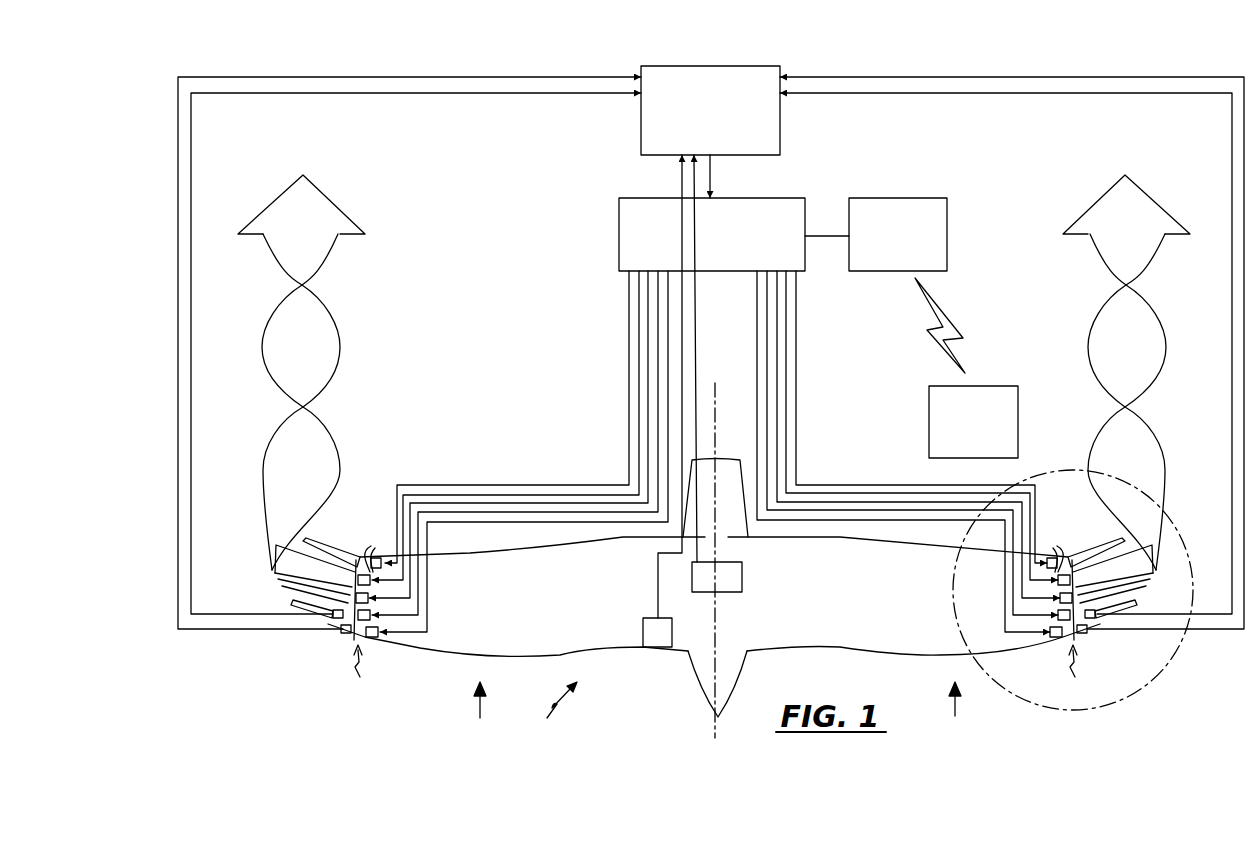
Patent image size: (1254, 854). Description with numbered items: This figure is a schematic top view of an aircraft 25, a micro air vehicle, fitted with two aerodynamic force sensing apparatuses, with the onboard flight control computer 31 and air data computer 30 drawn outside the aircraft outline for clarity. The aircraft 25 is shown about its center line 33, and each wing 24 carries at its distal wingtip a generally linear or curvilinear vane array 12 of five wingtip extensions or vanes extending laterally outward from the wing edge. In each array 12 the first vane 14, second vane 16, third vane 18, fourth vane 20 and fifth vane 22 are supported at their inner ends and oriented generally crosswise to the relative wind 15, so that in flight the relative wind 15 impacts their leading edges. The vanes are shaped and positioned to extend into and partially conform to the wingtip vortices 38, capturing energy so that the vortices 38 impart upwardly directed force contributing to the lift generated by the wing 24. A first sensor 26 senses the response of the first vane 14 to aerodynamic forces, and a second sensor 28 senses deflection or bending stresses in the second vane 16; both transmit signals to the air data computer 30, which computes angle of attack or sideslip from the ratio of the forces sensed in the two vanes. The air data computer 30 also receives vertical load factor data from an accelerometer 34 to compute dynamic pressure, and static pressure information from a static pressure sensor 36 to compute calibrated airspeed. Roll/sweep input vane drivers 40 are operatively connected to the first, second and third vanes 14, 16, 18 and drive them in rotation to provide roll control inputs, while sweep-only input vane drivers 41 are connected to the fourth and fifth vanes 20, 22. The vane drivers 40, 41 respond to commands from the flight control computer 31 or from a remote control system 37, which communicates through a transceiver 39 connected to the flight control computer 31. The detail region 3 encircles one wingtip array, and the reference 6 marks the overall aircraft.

The wing tip detail region 3 is at (1167, 670).
The aircraft 6 is at (553, 711).
The vane array 12 is at (717, 674).
The first vane 14 is at (333, 623).
The relative wind 15 is at (478, 710).
The second vane 16 is at (300, 600).
The third vane 18 is at (280, 573).
The fourth vane 20 is at (295, 553).
The fifth vane 22 is at (313, 537).
The wing 24 is at (577, 592).
The aircraft 25 is at (717, 592).
The first sensor 26 is at (346, 633).
The second sensor 28 is at (337, 608).
The air data computer 30 is at (748, 75).
The flight control computer 31 is at (757, 210).
The center line 33 is at (713, 662).
The accelerometer 34 is at (727, 578).
The static pressure sensor 36 is at (655, 637).
The remote control system 37 is at (990, 395).
The wingtip vortex 38 is at (312, 210).
The transceiver 39 is at (912, 210).
The roll/sweep input vane driver 40 is at (377, 615).
The sweep-only input vane driver 41 is at (713, 548).